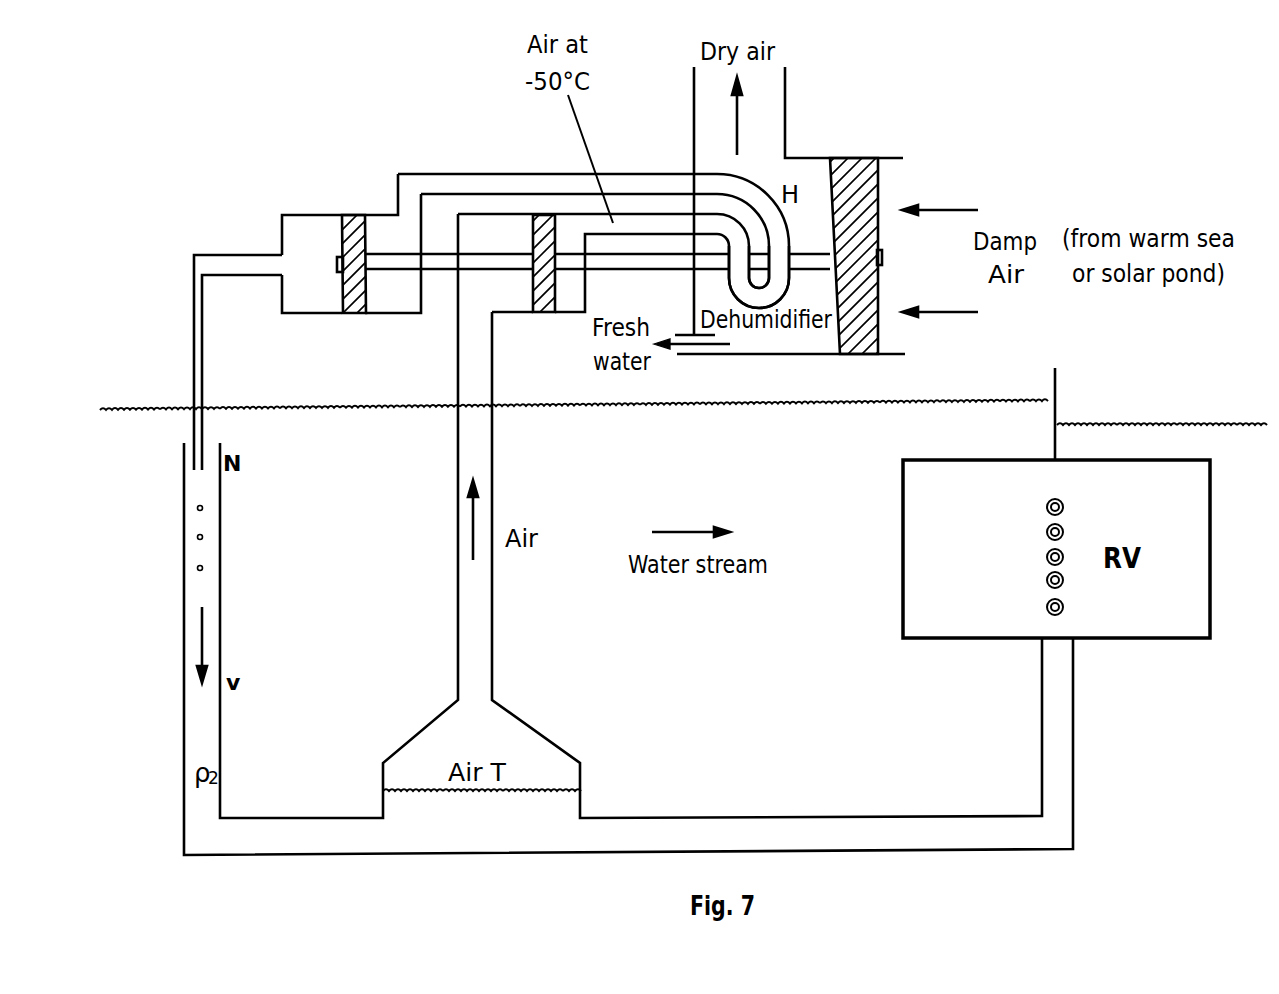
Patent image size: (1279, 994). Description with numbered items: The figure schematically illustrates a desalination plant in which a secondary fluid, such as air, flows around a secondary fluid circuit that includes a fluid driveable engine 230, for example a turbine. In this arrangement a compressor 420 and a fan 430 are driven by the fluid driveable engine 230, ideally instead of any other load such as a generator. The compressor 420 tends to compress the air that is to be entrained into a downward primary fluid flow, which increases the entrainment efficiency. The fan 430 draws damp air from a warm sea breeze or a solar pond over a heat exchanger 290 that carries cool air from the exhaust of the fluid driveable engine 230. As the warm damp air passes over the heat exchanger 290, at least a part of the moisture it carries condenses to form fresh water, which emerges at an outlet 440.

The compressor 420 is at (358, 305).
The fluid driveable engine 230 is at (545, 305).
The fan 430 is at (851, 167).
The outlet 440 is at (677, 357).
The heat exchanger 290 is at (770, 293).